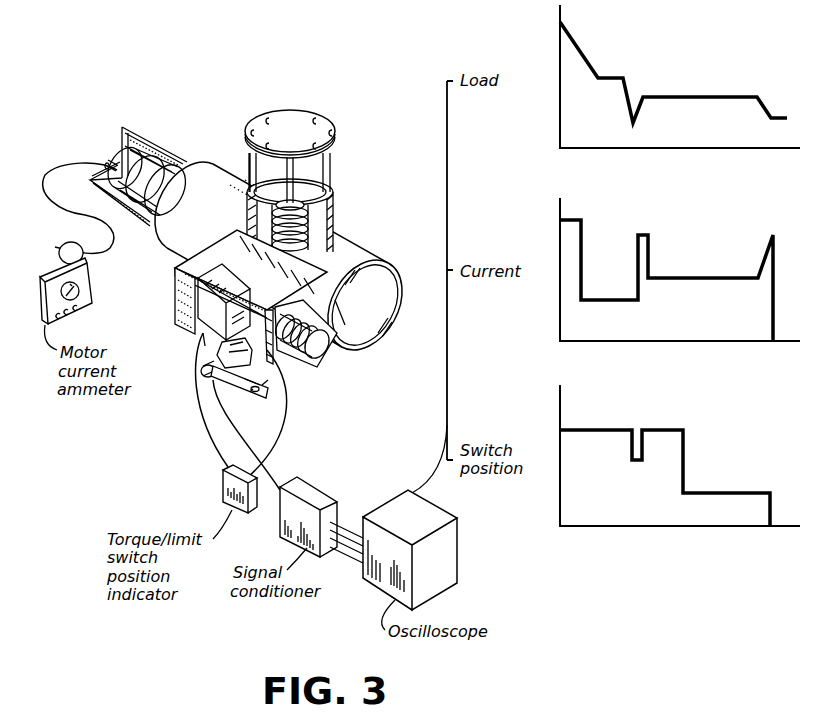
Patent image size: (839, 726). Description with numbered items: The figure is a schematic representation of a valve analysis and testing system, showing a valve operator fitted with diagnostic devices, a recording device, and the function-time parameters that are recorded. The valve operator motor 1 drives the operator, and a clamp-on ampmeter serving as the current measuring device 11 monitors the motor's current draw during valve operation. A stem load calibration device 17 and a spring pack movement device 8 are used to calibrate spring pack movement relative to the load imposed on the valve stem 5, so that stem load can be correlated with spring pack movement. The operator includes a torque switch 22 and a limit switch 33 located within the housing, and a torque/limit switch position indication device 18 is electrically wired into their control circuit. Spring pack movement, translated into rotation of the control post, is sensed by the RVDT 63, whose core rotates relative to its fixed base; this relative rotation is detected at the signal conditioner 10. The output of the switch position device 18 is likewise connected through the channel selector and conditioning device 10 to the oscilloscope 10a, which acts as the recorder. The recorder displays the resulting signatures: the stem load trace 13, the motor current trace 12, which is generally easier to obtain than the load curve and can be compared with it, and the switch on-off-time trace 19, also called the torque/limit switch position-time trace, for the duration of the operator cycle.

The valve operator motor 1 is at (139, 147).
The stem load calibration device 17 is at (330, 117).
The valve stem 5 is at (300, 192).
The current measuring device 11 is at (97, 283).
The limit switch 33 is at (203, 307).
The torque switch 22 is at (312, 343).
The RVDT 63 is at (206, 381).
The spring pack movement device 8 is at (224, 381).
The torque/limit switch position indication device 18 is at (219, 478).
The signal conditioner 10 is at (314, 485).
The oscilloscope 10a is at (442, 553).
The stem load trace 13 is at (768, 96).
The motor current trace 12 is at (754, 242).
The switch on-off-time trace 19 is at (754, 479).